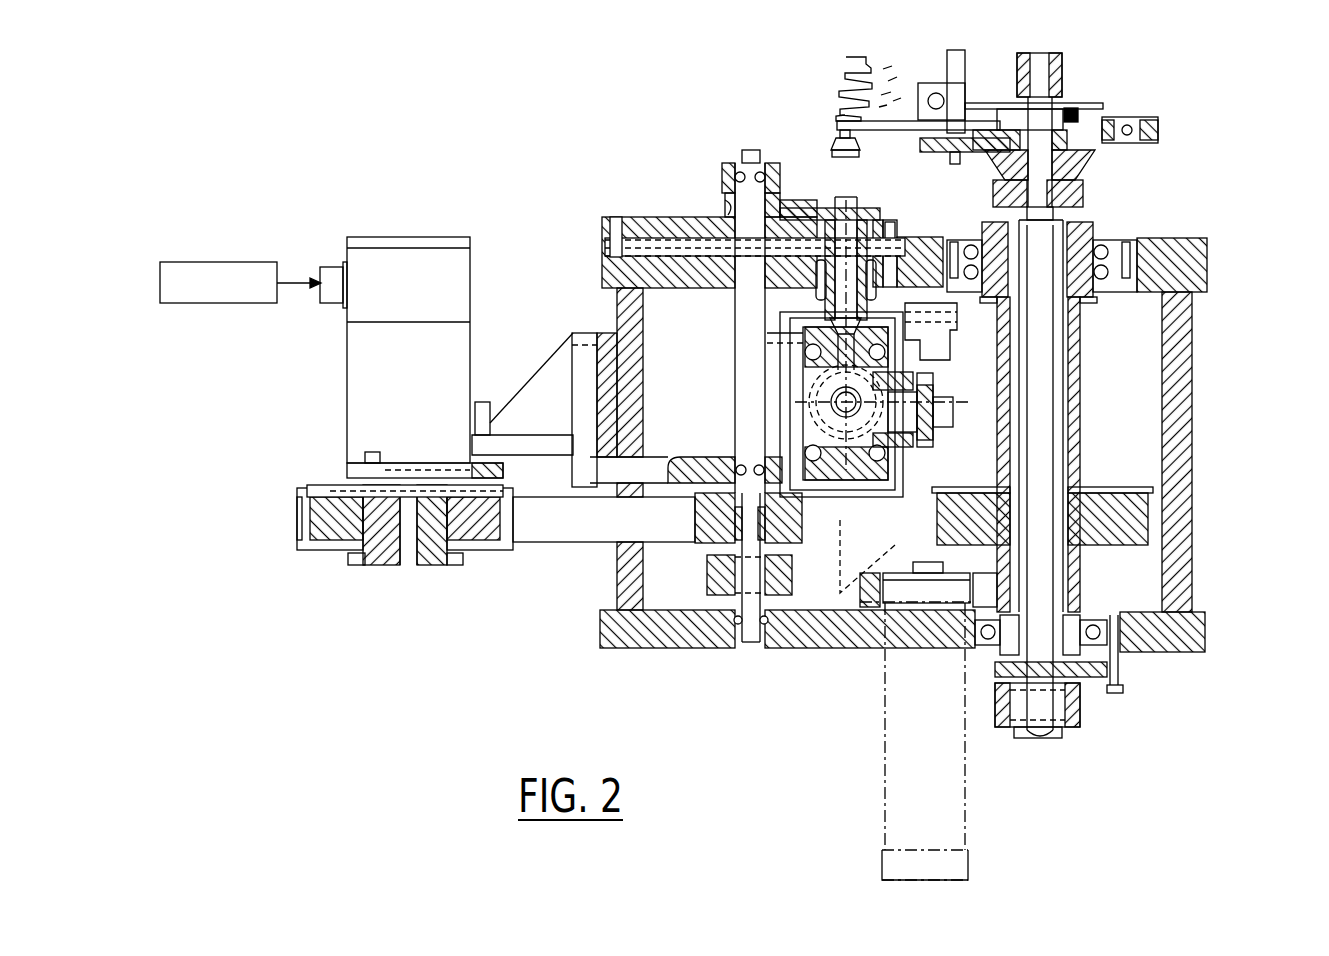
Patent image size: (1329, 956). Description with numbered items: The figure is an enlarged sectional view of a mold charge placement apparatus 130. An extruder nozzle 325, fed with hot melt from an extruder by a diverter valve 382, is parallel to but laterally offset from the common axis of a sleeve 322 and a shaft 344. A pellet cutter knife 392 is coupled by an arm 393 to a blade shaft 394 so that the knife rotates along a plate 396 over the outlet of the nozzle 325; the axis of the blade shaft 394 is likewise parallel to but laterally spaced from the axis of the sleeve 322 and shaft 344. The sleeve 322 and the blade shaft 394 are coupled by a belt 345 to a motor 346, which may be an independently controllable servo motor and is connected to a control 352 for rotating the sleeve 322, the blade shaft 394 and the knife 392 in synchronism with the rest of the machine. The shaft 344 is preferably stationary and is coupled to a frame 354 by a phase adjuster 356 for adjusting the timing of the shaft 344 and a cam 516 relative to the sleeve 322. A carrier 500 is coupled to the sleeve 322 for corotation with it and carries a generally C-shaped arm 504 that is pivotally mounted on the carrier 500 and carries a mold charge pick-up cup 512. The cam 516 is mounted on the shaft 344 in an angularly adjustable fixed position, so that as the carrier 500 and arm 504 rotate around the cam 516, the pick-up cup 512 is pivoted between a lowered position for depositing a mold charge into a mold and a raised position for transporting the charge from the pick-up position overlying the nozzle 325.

The mold charge placement apparatus 130 is at (533, 186).
The sleeve 322 is at (1077, 402).
The extruder nozzle 325 is at (848, 270).
The shaft 344 is at (1042, 445).
The belt 345 is at (546, 534).
The motor 346 is at (365, 374).
The control 352 is at (219, 262).
The frame 354 is at (1197, 636).
The phase adjuster 356 is at (1120, 711).
The diverter valve 382 is at (808, 406).
The pellet cutter knife 392 is at (829, 218).
The arm 393 is at (806, 206).
The blade shaft 394 is at (747, 355).
The plate 396 is at (676, 216).
The carrier 500 is at (1088, 155).
The arm 504 is at (876, 110).
The mold charge pick-up cup 512 is at (835, 140).
The cam 516 is at (1070, 110).